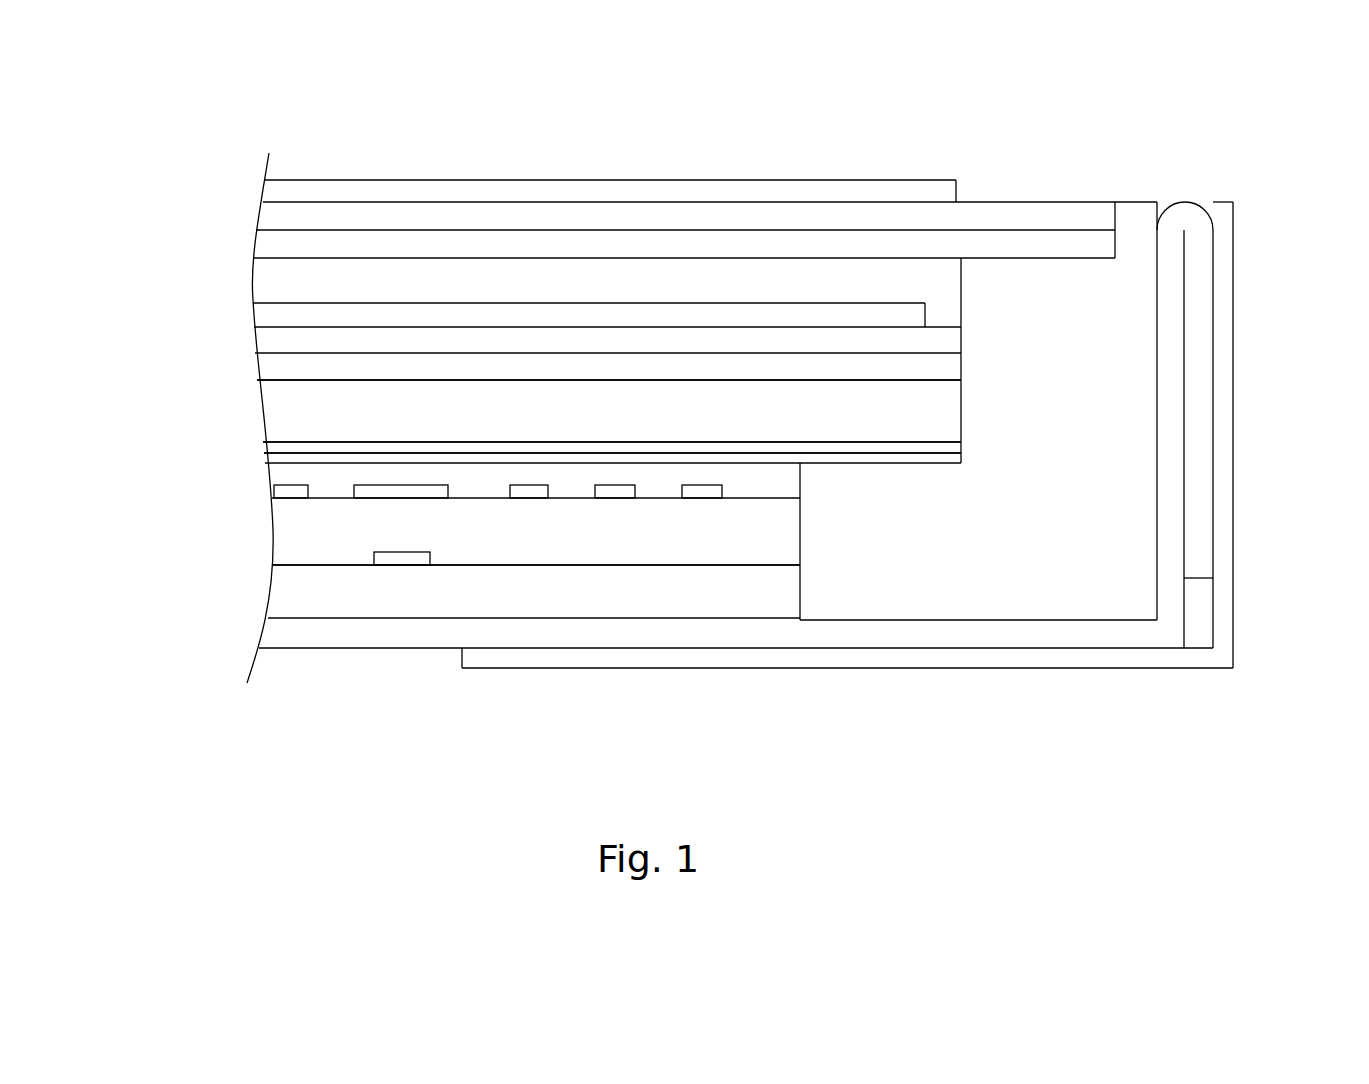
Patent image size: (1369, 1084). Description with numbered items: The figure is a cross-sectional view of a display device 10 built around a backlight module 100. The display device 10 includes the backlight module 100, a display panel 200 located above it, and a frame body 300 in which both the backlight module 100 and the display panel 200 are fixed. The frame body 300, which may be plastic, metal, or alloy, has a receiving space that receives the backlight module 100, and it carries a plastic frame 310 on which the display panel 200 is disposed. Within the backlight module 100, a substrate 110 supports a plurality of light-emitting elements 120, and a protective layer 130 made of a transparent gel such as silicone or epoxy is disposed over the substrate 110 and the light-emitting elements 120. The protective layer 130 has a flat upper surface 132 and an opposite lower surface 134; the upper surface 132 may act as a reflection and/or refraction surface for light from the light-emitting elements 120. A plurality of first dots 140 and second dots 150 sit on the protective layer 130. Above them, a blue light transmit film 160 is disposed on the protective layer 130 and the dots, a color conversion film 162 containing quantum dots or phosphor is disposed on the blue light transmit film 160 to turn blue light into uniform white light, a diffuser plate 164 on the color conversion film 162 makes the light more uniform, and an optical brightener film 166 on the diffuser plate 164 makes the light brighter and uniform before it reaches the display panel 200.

The display device 10 is at (102, 146).
The backlight module 100 is at (130, 465).
The substrate 110 is at (272, 593).
The light-emitting elements 120 is at (374, 552).
The protective layer 130 is at (606, 598).
The upper surface 132 is at (758, 500).
The lower surface 134 is at (705, 567).
The first dots 140 is at (448, 498).
The second dots 150 is at (548, 498).
The blue light transmit film 160 is at (270, 461).
The color conversion film 162 is at (268, 450).
The diffuser plate 164 is at (265, 410).
The optical brightener film 166 is at (230, 303).
The display panel 200 is at (230, 180).
The frame body 300 is at (809, 435).
The plastic frame 310 is at (1143, 508).